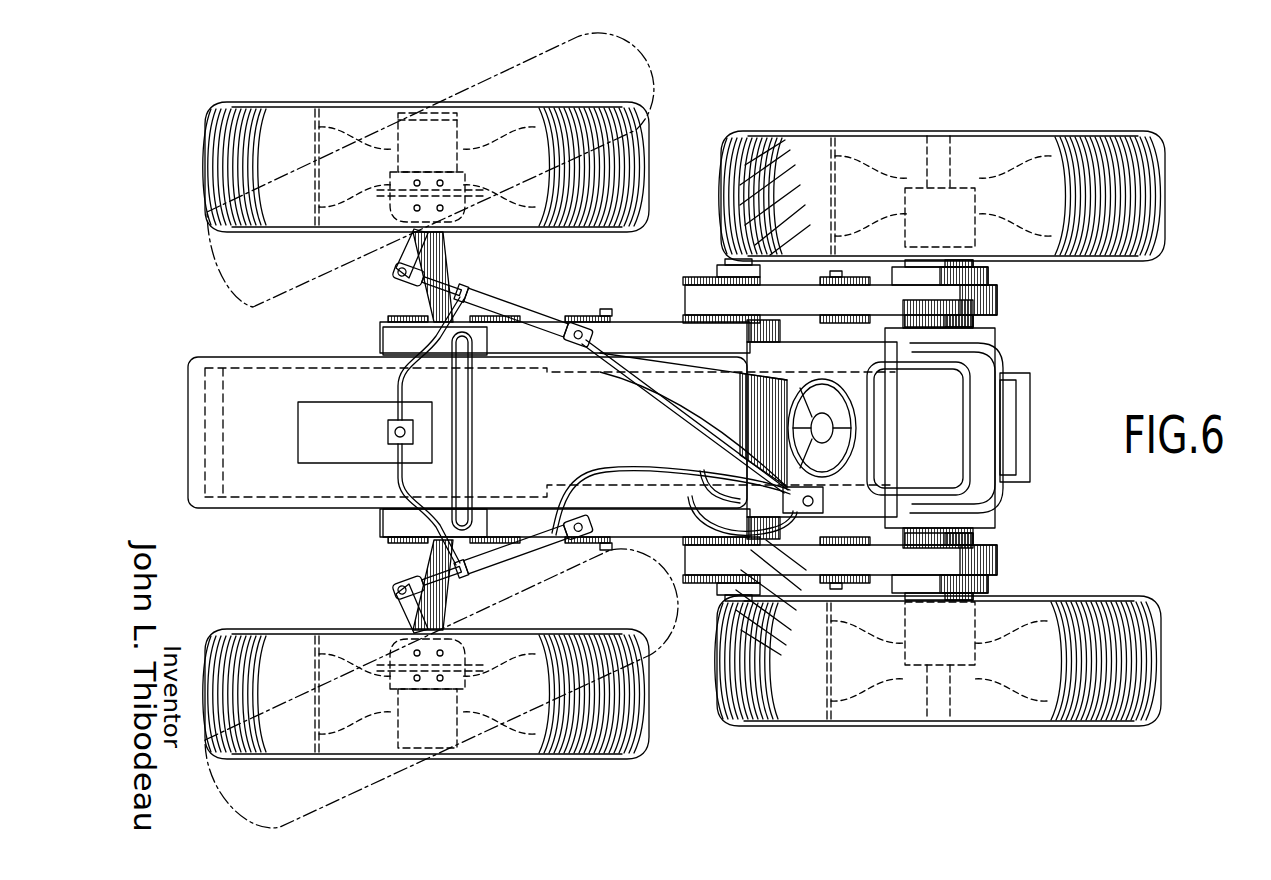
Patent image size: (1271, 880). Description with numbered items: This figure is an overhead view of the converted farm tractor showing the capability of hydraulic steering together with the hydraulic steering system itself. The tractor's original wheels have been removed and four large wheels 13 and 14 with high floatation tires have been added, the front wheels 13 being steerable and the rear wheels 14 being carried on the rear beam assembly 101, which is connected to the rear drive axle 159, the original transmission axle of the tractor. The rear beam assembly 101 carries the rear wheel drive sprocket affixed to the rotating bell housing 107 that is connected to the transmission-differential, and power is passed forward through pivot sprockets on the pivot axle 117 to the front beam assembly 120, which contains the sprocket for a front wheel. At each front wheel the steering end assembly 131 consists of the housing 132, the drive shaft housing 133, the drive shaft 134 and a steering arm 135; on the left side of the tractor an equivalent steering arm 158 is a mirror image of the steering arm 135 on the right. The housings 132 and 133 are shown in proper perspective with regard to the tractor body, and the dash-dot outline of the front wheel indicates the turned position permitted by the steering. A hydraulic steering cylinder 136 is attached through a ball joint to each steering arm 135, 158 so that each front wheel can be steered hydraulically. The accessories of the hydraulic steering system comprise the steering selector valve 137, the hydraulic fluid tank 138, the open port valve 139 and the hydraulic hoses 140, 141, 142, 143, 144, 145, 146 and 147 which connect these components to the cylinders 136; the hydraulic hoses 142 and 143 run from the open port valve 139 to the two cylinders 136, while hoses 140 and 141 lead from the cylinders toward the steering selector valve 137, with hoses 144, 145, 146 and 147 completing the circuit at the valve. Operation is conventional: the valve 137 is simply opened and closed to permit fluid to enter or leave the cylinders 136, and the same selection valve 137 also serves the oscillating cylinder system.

The large wheel 13 is at (210, 130).
The large wheel 14 is at (732, 157).
The rear beam assembly 101 is at (1000, 298).
The rotating bell housing 107 is at (982, 636).
The pivot axle 117 is at (732, 264).
The front beam assembly 120 is at (628, 316).
The steering end assembly 131 is at (413, 153).
The housing 132 is at (418, 143).
The drive shaft housing 133 is at (423, 293).
The drive shaft 134 is at (428, 98).
The steering arm 135 is at (413, 243).
The hydraulic steering cylinder 136 is at (520, 308).
The steering selector valve 137 is at (945, 510).
The hydraulic fluid tank 138 is at (298, 422).
The open port valve 139 is at (393, 425).
The hydraulic hose 140 is at (648, 468).
The hydraulic hose 141 is at (633, 388).
The hydraulic hose 142 is at (400, 482).
The hydraulic hose 143 is at (405, 300).
The hydraulic hose 144 is at (808, 486).
The hydraulic hose 145 is at (820, 456).
The hydraulic hose 146 is at (690, 504).
The hydraulic hose 147 is at (712, 486).
The steering arm 158 is at (400, 608).
The rear drive axle 159 is at (937, 128).